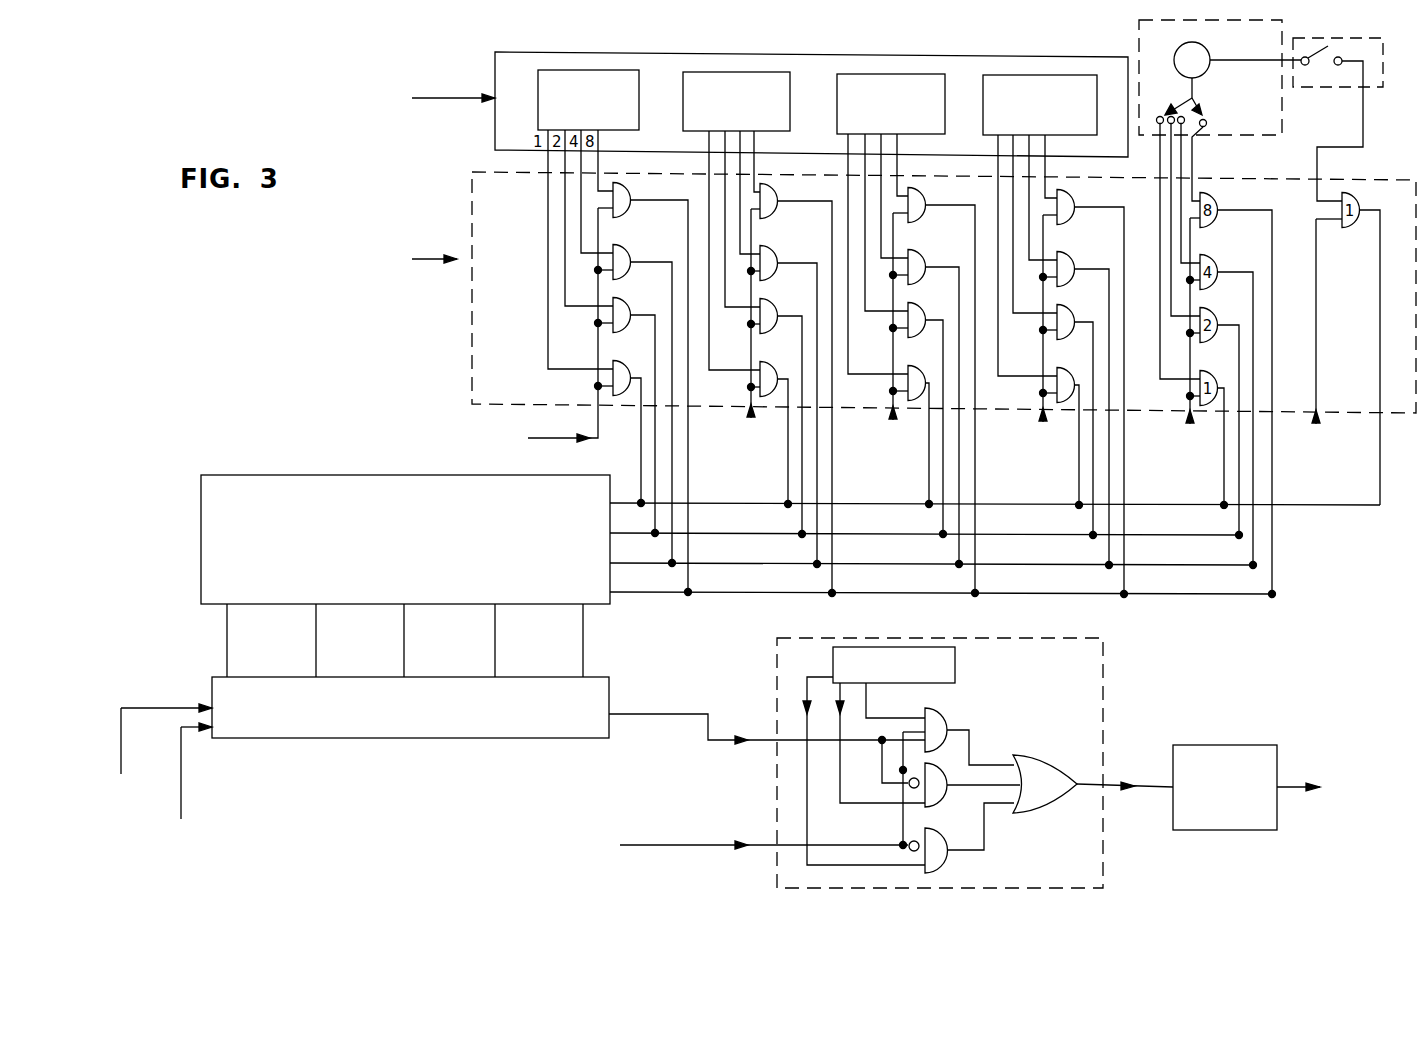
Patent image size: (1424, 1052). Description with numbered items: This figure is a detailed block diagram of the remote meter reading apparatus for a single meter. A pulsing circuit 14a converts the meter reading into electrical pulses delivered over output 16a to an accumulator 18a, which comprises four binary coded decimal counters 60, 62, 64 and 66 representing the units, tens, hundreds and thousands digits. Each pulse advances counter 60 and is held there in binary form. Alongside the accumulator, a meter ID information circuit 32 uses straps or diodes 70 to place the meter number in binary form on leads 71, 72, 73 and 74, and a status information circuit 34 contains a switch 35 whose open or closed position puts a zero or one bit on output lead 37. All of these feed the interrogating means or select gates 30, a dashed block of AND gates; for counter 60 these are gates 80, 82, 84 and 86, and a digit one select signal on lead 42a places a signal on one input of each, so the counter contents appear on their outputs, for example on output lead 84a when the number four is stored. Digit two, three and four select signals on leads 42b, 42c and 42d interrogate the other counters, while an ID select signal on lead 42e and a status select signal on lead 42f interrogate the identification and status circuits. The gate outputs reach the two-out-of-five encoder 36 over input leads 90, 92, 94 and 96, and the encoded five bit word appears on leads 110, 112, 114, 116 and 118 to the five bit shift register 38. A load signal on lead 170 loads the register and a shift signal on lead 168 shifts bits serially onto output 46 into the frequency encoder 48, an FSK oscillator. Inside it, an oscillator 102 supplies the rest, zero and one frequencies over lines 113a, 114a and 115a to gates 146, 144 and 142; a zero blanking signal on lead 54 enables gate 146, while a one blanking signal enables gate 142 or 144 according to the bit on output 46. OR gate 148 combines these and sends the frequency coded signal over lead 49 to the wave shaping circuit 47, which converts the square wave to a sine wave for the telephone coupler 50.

The pulsing circuit 14a is at (353, 94).
The pulsing circuit output 16a is at (480, 94).
The accumulator 18a is at (966, 55).
The interrogating means or select gates 30 is at (465, 327).
The meter ID information 32 is at (1240, 137).
The status information 34 is at (1383, 41).
The switch 35 is at (1337, 66).
The encoder 36 is at (201, 543).
The output lead 37 is at (1364, 146).
The shift register 38 is at (609, 677).
The digit 1 select signal lead 42a is at (595, 402).
The digit 2 select signal lead 42b is at (748, 406).
The digit 3 select signal lead 42c is at (891, 406).
The digit 4 select signal lead 42d is at (1040, 406).
The ID select signal lead 42e is at (1187, 406).
The status select signal lead 42f is at (1318, 408).
The shift register output 46 is at (630, 716).
The wave shaping circuit 47 is at (1254, 745).
The frequency encoder 48 is at (1047, 643).
The lead 49 is at (1150, 780).
The telephone coupler 50 is at (1343, 788).
The blanking signal lead 54 is at (760, 847).
The BCD counter digit 1 60 is at (602, 70).
The BCD counter digit 2 62 is at (708, 72).
The BCD counter digit 3 64 is at (858, 74).
The BCD counter digit 4 66 is at (1058, 75).
The straps or diodes 70 is at (1188, 99).
The ID input lead 71 is at (1160, 222).
The ID input lead 72 is at (1170, 184).
The ID input lead 73 is at (1181, 177).
The ID input lead 74 is at (1194, 140).
The select gate 80 is at (618, 364).
The select gate 82 is at (621, 304).
The select gate 84 is at (620, 246).
The output lead of gate 84 84a is at (634, 260).
The select gate 86 is at (624, 188).
The encoder input lead 90 is at (710, 505).
The encoder input lead 92 is at (710, 535).
The encoder input lead 94 is at (712, 565).
The encoder input lead 96 is at (716, 594).
The oscillator 102 is at (955, 674).
The encoder output lead 110 is at (227, 658).
The encoder output lead 112 is at (316, 658).
The encoder output lead 114 is at (404, 658).
The encoder output lead 116 is at (495, 658).
The encoder output lead 118 is at (583, 658).
The rest frequency line 113a is at (824, 676).
The zero frequency line 114a is at (840, 728).
The one frequency line 115a is at (872, 714).
The gate 142 is at (943, 716).
The gate 144 is at (948, 779).
The gate 146 is at (934, 830).
The OR gate 148 is at (1072, 738).
The shift signal lead 168 is at (183, 764).
The load signal lead 170 is at (122, 740).